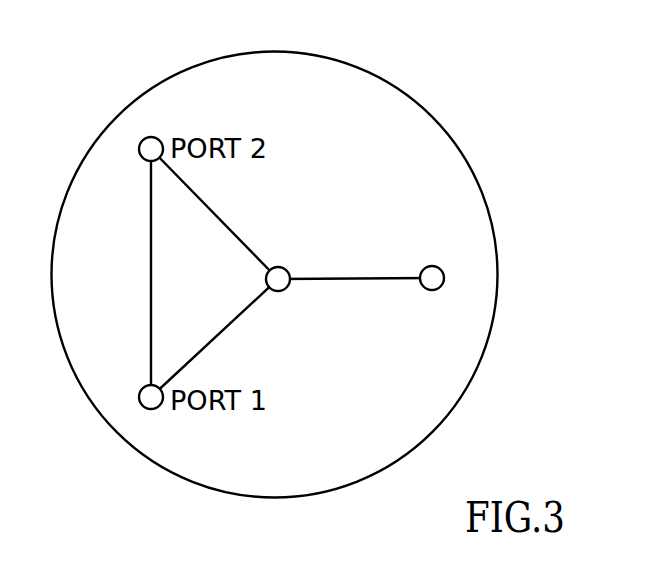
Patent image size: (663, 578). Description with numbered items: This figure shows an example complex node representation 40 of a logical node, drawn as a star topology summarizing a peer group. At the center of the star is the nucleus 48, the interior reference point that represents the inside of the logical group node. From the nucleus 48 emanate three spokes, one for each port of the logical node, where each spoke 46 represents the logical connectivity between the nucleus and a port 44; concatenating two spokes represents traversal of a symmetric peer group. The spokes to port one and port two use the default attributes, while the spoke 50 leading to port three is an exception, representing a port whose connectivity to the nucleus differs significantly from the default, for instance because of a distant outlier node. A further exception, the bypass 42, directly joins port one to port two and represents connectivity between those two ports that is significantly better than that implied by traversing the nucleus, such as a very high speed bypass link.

The complex node representation 40 is at (432, 108).
The bypass 42 is at (148, 222).
The port 44 is at (422, 268).
The spoke 46 is at (213, 220).
The nucleus 48 is at (278, 267).
The exception spoke 50 is at (330, 270).